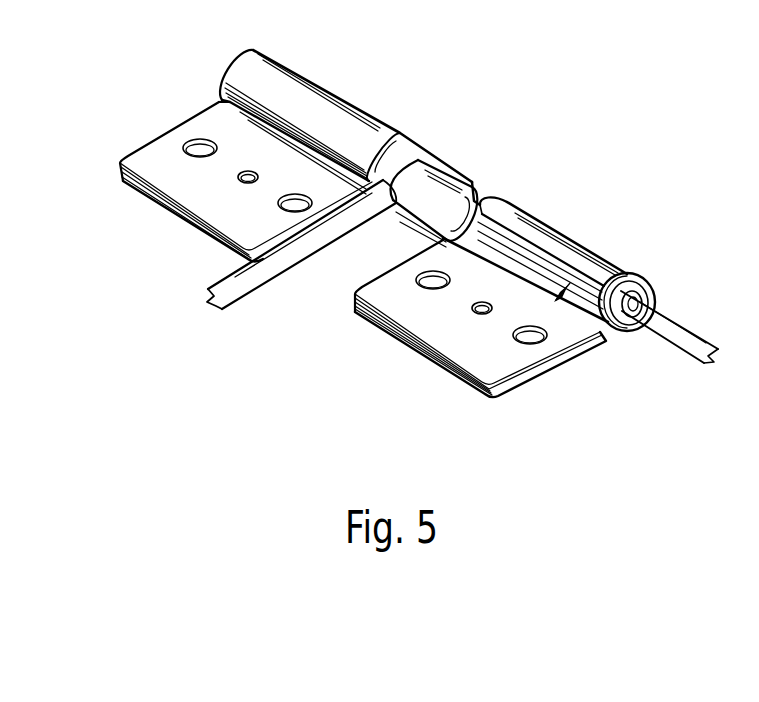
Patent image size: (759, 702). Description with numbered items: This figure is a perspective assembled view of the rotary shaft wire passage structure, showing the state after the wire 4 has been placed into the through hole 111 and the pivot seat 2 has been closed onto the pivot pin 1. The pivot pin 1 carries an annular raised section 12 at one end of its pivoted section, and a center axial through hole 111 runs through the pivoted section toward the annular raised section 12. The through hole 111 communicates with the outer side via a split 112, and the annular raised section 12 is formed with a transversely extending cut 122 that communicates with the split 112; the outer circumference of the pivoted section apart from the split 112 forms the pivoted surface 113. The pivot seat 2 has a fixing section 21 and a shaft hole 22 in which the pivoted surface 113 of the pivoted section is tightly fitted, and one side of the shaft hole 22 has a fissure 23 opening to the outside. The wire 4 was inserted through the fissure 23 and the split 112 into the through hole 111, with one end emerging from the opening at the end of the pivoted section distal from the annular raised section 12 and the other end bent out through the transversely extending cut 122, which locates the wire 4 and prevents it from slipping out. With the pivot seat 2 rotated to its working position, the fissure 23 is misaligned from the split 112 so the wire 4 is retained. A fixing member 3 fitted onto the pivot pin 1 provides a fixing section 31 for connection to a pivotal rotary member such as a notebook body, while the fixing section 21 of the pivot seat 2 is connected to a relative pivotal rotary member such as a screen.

The pivot pin 1 is at (457, 158).
The pivot seat 2 is at (608, 238).
The fixing member 3 is at (328, 78).
The wire 4 is at (263, 278).
The annular raised section 12 is at (420, 212).
The fixing section 21 is at (465, 333).
The shaft hole 22 is at (627, 334).
The fissure 23 is at (555, 302).
The fixing section 31 is at (217, 202).
The through hole 111 is at (622, 303).
The split 112 is at (473, 177).
The pivoted surface 113 is at (543, 268).
The transversely extending cut 122 is at (395, 164).